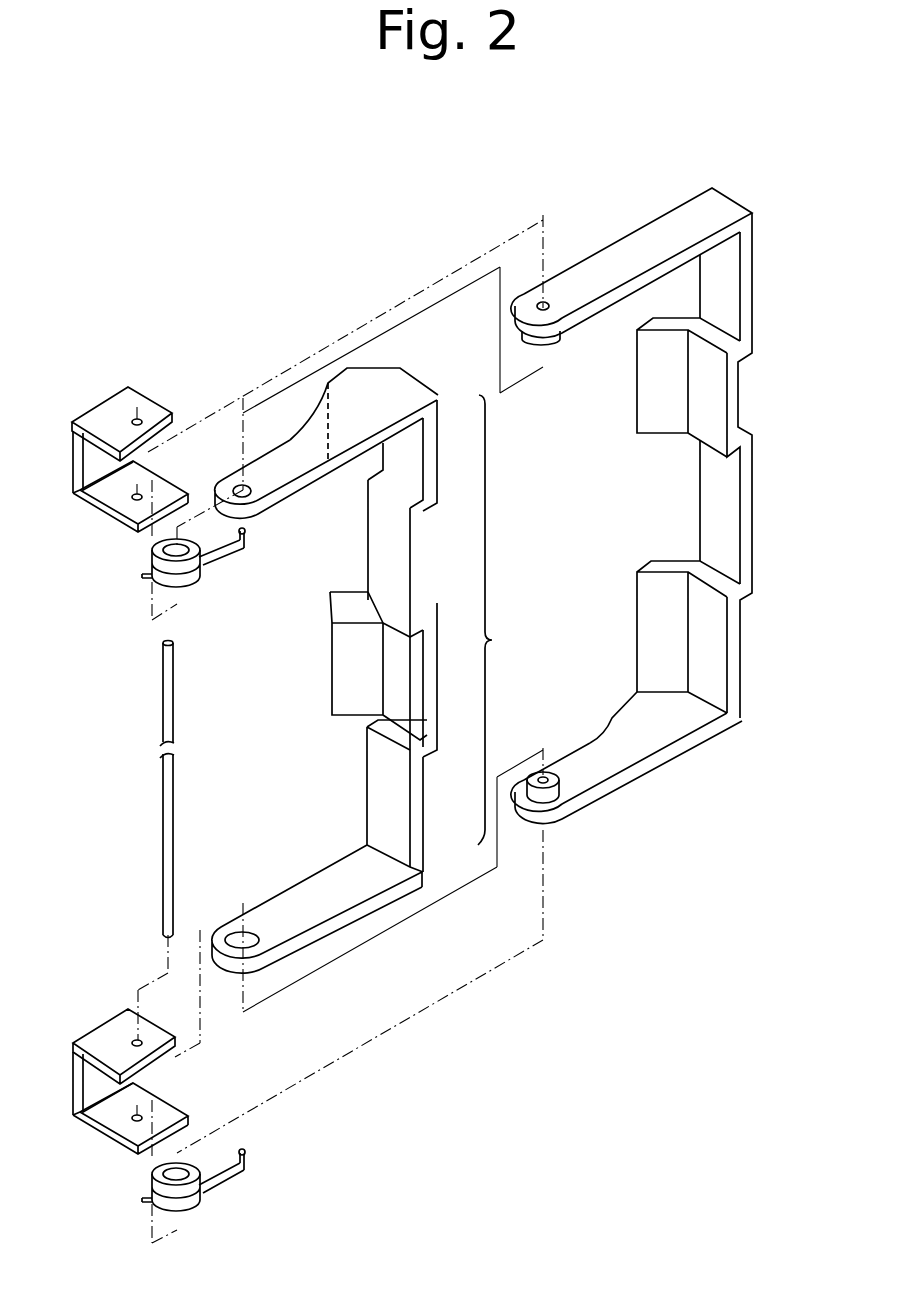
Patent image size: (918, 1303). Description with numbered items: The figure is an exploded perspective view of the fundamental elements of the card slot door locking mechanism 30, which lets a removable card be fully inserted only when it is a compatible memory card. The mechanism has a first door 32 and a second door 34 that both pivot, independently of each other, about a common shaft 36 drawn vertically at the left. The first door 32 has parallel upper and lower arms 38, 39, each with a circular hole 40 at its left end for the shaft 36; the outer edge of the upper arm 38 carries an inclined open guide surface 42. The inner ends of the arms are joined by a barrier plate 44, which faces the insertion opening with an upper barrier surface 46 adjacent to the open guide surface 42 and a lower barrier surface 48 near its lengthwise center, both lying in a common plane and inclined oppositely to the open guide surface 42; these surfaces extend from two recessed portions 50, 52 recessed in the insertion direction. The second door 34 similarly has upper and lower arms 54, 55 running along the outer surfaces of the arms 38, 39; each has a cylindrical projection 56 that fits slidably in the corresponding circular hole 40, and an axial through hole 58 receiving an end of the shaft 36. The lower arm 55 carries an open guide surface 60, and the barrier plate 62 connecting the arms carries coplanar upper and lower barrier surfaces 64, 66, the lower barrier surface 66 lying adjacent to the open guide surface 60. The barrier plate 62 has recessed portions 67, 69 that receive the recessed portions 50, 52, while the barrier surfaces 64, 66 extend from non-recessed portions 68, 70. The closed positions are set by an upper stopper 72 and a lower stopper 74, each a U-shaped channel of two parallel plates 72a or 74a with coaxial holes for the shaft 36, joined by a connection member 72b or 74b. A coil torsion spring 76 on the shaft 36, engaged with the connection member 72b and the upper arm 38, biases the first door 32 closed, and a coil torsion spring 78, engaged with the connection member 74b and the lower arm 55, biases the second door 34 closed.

The card slot door locking mechanism 30 is at (192, 206).
The first door 32 is at (348, 645).
The second door 34 is at (684, 525).
The shaft 36 is at (163, 802).
The upper arm 38 is at (285, 470).
The lower arm 39 is at (325, 878).
The circular hole 40 is at (258, 497).
The open guide surface 42 is at (305, 405).
The barrier plate 44 is at (503, 620).
The upper barrier surface 46 is at (365, 466).
The lower barrier surface 48 is at (332, 628).
The recessed portion 50 is at (437, 490).
The recessed portion 52 is at (432, 727).
The upper arm 54 is at (615, 258).
The lower arm 55 is at (607, 792).
The cylindrical projection 56 is at (550, 346).
The axial through hole 58 is at (556, 310).
The open guide surface 60 is at (600, 730).
The barrier plate 62 is at (778, 462).
The upper barrier surface 64 is at (650, 388).
The lower barrier surface 66 is at (645, 590).
The recessed portion 67 is at (750, 266).
The non-recessed portion 68 is at (742, 406).
The recessed portion 69 is at (750, 492).
The non-recessed portion 70 is at (771, 627).
The upper stopper 72 is at (104, 432).
The parallel plates 72a is at (150, 406).
The connection member 72b is at (72, 452).
The lower stopper 74 is at (102, 1076).
The parallel plates 74a is at (115, 1027).
The connection member 74b is at (72, 1078).
The coil torsion spring 76 is at (190, 584).
The coil torsion spring 78 is at (205, 1190).